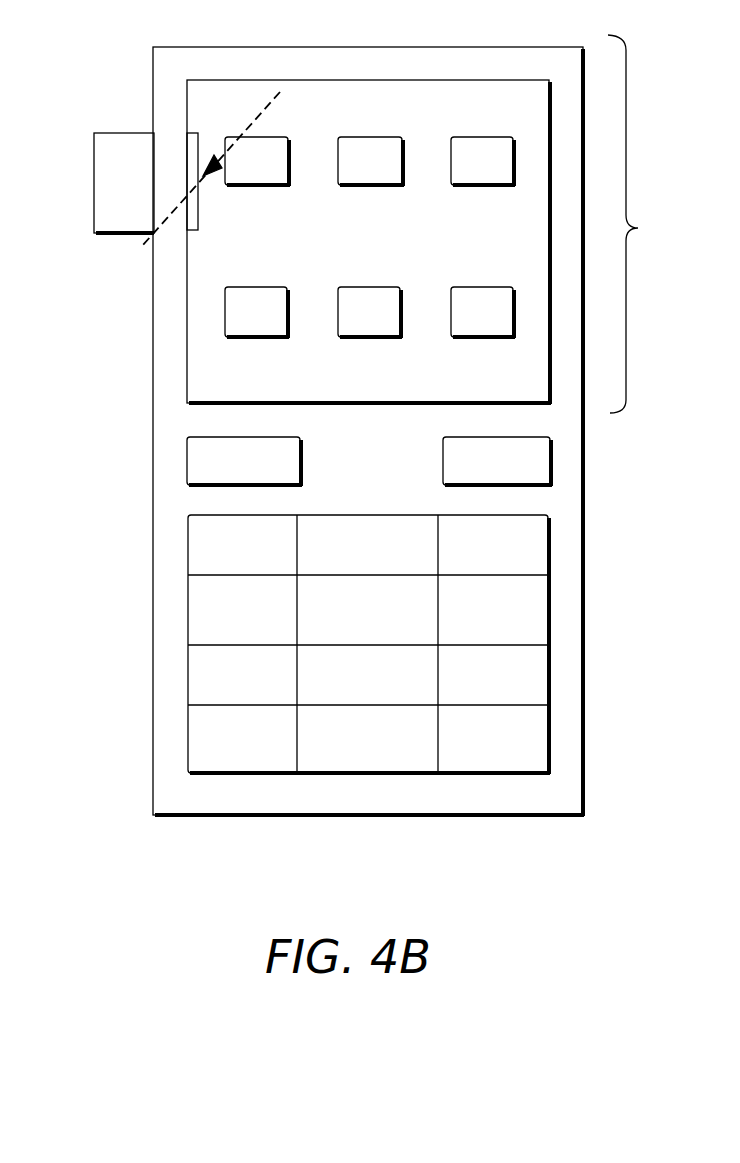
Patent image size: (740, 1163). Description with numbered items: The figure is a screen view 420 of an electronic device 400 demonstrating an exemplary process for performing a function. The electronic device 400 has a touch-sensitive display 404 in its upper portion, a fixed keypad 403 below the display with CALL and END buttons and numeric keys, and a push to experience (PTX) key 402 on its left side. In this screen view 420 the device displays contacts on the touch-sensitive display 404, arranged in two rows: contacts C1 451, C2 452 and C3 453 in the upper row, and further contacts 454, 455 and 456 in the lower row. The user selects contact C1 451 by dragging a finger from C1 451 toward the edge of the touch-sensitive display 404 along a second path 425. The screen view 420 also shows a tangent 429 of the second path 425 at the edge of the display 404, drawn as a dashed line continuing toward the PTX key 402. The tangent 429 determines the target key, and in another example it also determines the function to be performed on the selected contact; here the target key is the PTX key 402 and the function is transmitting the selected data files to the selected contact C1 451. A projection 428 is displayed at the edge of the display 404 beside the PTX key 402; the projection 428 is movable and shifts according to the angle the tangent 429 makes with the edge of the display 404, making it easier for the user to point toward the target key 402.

The electronic device 400 is at (578, 896).
The push to experience (PTX) key 402 is at (94, 183).
The fixed keypad 403 is at (127, 437).
The touch-sensitive display 404 is at (368, 80).
The screen view 420 is at (649, 224).
The second path 425 is at (203, 182).
The projection 428 is at (192, 233).
The tangent 429 is at (268, 102).
The contact C1 451 is at (268, 137).
The contact C2 452 is at (355, 137).
The contact C3 453 is at (480, 137).
The contact icon C4 454 is at (247, 338).
The contact icon C5 455 is at (338, 300).
The contact icon C6 456 is at (482, 287).